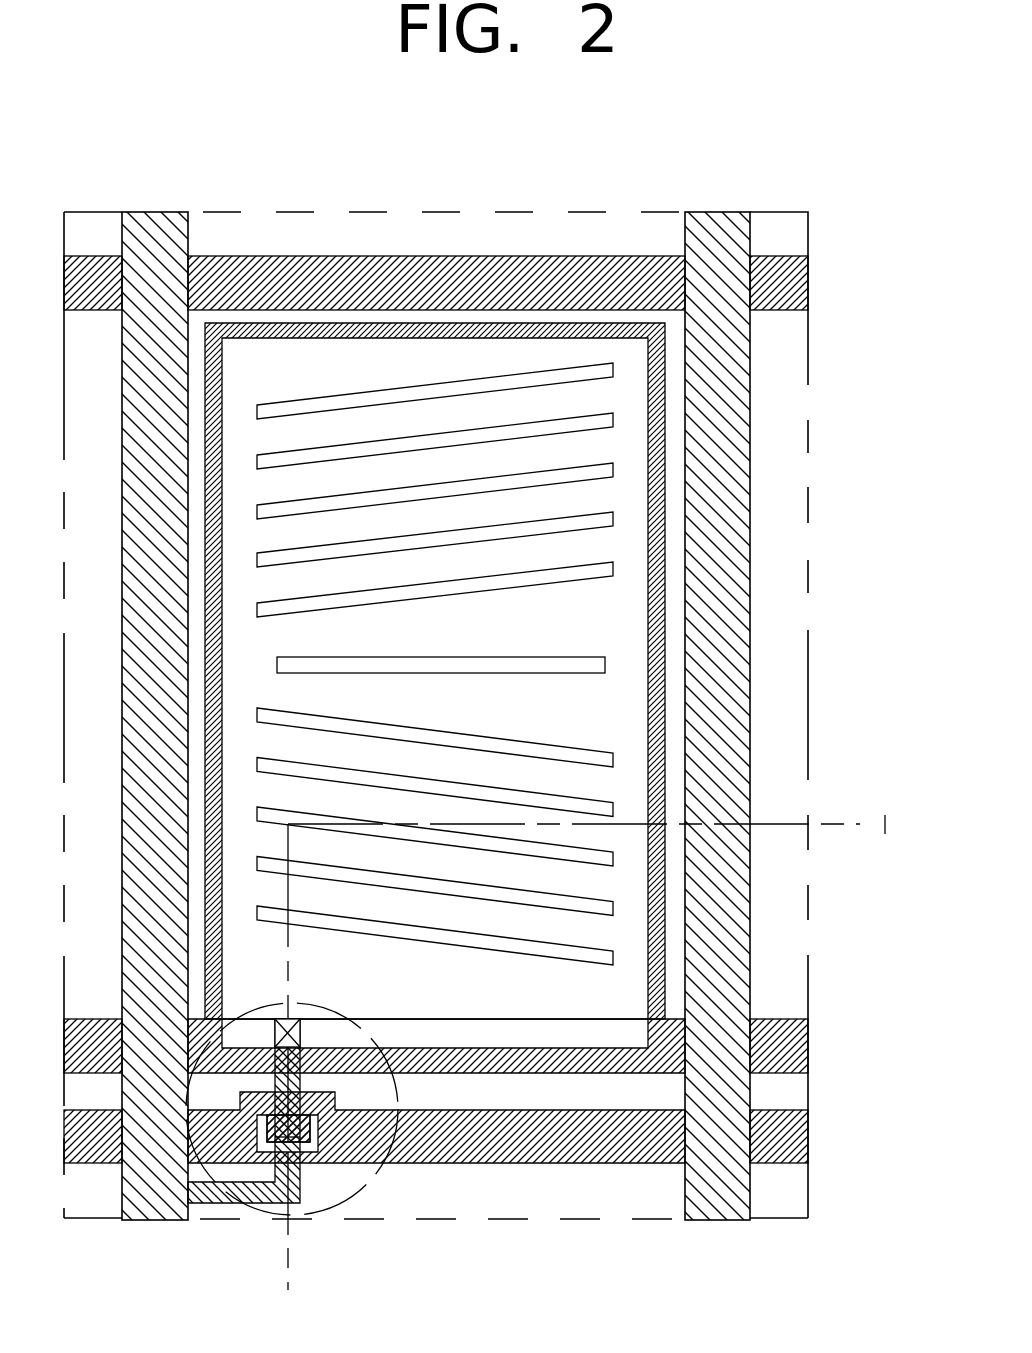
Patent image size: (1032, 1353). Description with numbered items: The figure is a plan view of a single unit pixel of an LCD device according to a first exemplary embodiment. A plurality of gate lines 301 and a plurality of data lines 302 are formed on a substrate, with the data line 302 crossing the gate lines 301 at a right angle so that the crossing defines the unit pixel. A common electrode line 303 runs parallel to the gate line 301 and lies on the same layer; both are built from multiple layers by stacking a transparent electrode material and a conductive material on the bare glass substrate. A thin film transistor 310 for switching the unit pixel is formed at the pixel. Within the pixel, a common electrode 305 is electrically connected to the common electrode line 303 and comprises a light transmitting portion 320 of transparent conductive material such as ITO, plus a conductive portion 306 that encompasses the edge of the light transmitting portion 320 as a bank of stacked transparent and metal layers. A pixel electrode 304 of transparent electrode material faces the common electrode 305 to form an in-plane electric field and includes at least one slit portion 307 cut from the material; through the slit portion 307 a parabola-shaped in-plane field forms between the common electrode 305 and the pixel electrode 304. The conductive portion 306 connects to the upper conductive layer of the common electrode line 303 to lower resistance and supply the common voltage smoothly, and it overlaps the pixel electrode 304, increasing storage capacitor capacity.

The gate line 301 is at (778, 281).
The data line 302 is at (150, 1187).
The common electrode line 303 is at (783, 1048).
The pixel electrode 304 is at (613, 978).
The common electrode 305 is at (665, 556).
The conductive portion 306 is at (665, 453).
The slit portion 307 is at (585, 902).
The thin film transistor 310 is at (547, 1088).
The light transmitting portion 320 is at (584, 678).